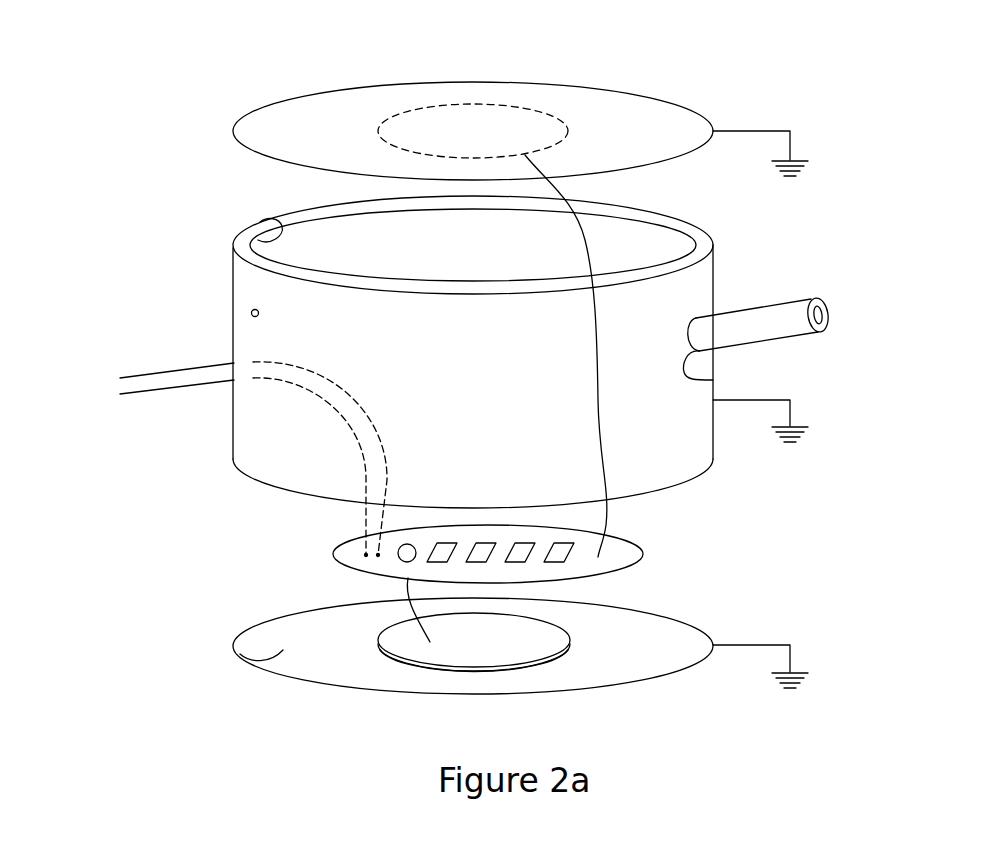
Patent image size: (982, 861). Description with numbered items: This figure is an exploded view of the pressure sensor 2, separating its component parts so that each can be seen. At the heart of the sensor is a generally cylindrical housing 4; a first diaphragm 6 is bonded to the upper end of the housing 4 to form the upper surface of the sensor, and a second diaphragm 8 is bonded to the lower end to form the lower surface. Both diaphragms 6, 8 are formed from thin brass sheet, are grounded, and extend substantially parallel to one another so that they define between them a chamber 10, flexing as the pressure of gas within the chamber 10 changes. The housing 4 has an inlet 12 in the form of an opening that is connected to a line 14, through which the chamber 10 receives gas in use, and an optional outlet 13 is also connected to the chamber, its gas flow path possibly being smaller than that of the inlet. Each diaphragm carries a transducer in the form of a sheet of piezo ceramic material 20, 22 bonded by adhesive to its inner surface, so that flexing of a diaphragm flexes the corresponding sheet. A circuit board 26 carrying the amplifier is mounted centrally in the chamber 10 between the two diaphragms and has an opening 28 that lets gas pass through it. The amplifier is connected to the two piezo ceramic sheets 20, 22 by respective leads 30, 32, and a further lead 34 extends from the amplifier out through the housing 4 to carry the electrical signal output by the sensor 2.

The pressure sensor 2 is at (870, 148).
The housing 4 is at (703, 280).
The first diaphragm 6 is at (666, 118).
The second diaphragm 8 is at (240, 652).
The chamber 10 is at (278, 222).
The inlet 12 is at (715, 379).
The outlet 13 is at (252, 310).
The line 14 is at (793, 300).
The sheet of piezo ceramic material 20 is at (508, 127).
The sheet of piezo ceramic material 22 is at (545, 647).
The circuit board 26 is at (643, 553).
The opening 28 is at (362, 553).
The lead 30 is at (563, 187).
The lead 32 is at (413, 607).
The lead 34 is at (158, 378).